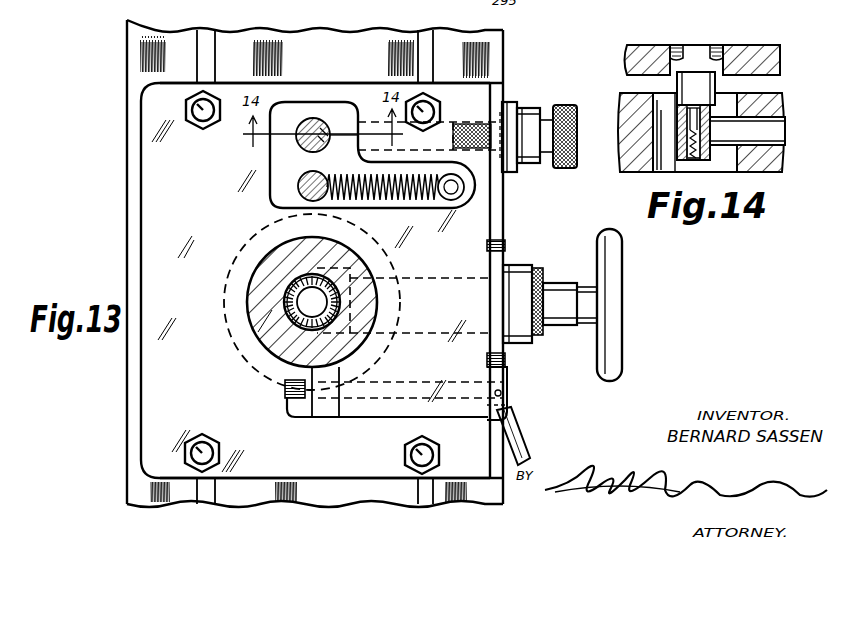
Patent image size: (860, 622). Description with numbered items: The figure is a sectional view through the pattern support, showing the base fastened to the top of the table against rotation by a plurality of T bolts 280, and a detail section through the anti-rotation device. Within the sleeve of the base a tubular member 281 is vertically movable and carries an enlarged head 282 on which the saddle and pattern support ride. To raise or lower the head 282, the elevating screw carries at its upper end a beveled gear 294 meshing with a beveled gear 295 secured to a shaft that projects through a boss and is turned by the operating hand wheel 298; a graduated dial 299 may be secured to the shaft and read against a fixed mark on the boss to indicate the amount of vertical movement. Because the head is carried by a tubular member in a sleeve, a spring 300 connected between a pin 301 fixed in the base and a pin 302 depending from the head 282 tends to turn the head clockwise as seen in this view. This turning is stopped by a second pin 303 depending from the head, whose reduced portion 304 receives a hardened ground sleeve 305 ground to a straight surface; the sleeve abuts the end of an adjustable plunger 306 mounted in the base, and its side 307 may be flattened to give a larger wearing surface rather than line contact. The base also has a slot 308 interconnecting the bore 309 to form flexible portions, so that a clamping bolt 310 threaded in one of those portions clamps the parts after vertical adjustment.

In FIG. 13, the T bolts 280 is at (195, 103).
In FIG. 13, the tubular member 281 is at (255, 298).
In FIG. 14, the enlarged head 282 is at (738, 55).
In FIG. 13, the beveled gear 294 is at (262, 338).
In FIG. 13, the beveled gear 295 is at (380, 262).
In FIG. 13, the operating hand wheel 298 is at (625, 260).
In FIG. 13, the graduated dial 299 is at (533, 340).
In FIG. 13, the spring 300 is at (398, 198).
In FIG. 13, the pin 301 is at (458, 200).
In FIG. 13, the pin 302 is at (290, 200).
In FIG. 13, the second pin 303 is at (306, 182).
In FIG. 14, the second pin 303 is at (690, 88).
In FIG. 13, the reduced portion 304 is at (304, 120).
In FIG. 14, the reduced portion 304 is at (700, 120).
In FIG. 14, the hardened ground sleeve 305 is at (668, 172).
In FIG. 13, the adjustable plunger 306 is at (343, 148).
In FIG. 14, the adjustable plunger 306 is at (765, 127).
In FIG. 13, the side 307 is at (325, 135).
In FIG. 14, the side 307 is at (705, 165).
In FIG. 13, the slot 308 is at (312, 417).
In FIG. 13, the bore 309 is at (340, 402).
In FIG. 13, the clamping bolt 310 is at (445, 395).